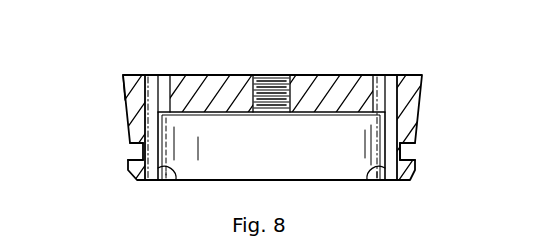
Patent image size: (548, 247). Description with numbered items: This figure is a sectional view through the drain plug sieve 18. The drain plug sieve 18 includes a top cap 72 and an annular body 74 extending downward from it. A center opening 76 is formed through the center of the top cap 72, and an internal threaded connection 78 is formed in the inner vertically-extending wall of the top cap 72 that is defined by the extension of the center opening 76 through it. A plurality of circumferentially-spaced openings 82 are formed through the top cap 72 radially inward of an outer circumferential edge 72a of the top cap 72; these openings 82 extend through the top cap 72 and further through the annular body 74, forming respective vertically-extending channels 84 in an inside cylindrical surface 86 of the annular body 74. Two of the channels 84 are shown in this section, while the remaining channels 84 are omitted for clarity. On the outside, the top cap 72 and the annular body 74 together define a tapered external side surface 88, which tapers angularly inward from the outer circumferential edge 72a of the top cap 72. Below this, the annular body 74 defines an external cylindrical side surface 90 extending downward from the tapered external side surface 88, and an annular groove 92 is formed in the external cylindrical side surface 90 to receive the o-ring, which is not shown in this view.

The drain plug sieve 18 is at (326, 72).
The outer circumferential edge 72a is at (122, 79).
The tapered external side surface 88 is at (125, 99).
The openings 82 is at (148, 84).
The internal threaded connection 78 is at (263, 81).
The center opening 76 is at (288, 84).
The external cylindrical side surface 90 is at (416, 142).
The annular body 74 is at (128, 138).
The annular groove 92 is at (127, 162).
The top cap 72 is at (230, 114).
The inside cylindrical surface 86 is at (330, 170).
The vertically-extending channels 84 is at (170, 183).